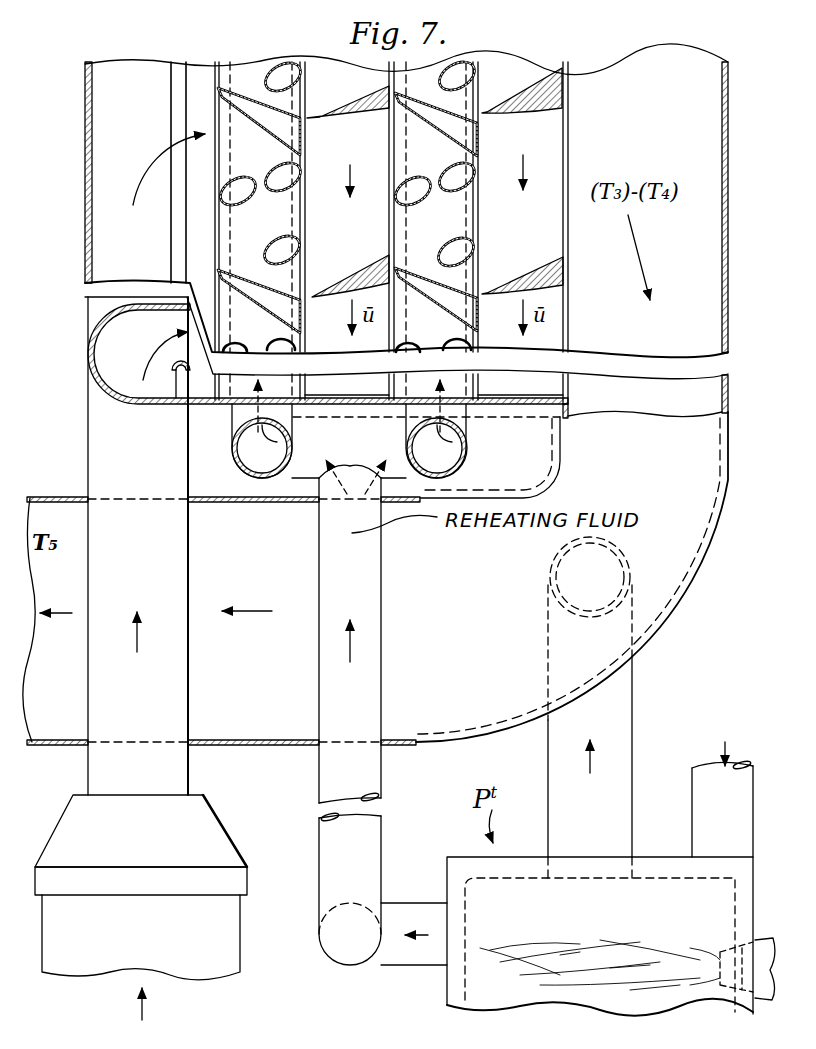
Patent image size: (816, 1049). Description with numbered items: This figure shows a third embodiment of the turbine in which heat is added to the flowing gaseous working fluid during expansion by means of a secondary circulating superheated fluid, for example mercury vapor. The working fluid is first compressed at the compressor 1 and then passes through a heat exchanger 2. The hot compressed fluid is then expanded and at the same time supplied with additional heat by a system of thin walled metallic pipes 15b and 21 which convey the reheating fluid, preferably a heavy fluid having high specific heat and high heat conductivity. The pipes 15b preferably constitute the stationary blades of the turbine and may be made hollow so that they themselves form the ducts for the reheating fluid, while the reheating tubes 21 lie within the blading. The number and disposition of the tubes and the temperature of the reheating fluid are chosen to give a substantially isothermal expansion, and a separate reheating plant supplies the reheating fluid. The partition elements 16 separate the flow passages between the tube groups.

The compressor 1 is at (208, 838).
The heat exchanger 2 is at (74, 752).
The thin walled metallic pipes 15b is at (250, 96).
The baffle / hatched partition 16 is at (337, 102).
The thin walled metallic pipes 21 is at (243, 205).